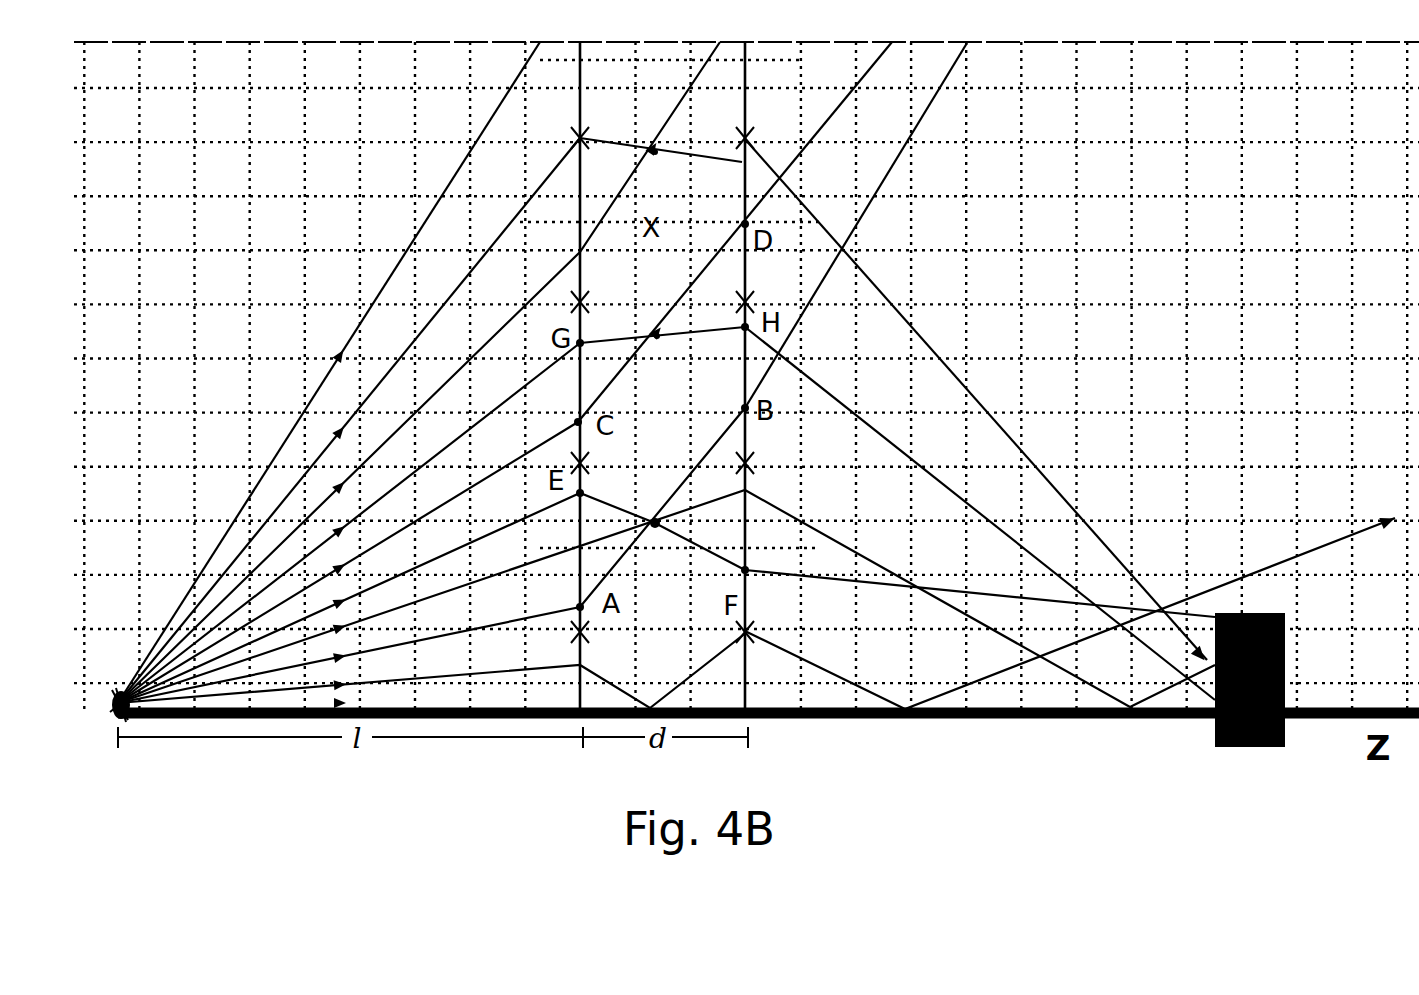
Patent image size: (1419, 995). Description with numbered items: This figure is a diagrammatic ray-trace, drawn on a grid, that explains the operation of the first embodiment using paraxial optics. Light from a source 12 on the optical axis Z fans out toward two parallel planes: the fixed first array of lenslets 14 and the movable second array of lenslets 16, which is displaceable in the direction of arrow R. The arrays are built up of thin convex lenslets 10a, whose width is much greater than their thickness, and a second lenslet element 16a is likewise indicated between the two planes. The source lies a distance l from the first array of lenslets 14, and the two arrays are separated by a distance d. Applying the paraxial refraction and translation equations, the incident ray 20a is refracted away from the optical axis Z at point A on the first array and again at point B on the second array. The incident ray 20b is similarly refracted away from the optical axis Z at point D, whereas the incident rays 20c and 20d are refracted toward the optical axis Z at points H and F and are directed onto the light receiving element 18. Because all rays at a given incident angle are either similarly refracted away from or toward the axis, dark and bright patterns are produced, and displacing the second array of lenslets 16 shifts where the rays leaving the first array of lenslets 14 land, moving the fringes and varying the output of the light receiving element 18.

The light source 12 is at (117, 742).
The first array of lenslets 14 is at (578, 363).
The second array of lenslets 16 is at (737, 361).
The thin convex lenslet 10a is at (661, 171).
The second lens element / light channel 16a is at (662, 350).
The light receiving element 18 is at (1276, 680).
The incident ray 20a is at (874, 208).
The incident ray 20b is at (749, 215).
The incident ray 20c is at (980, 513).
The incident ray 20d is at (980, 604).